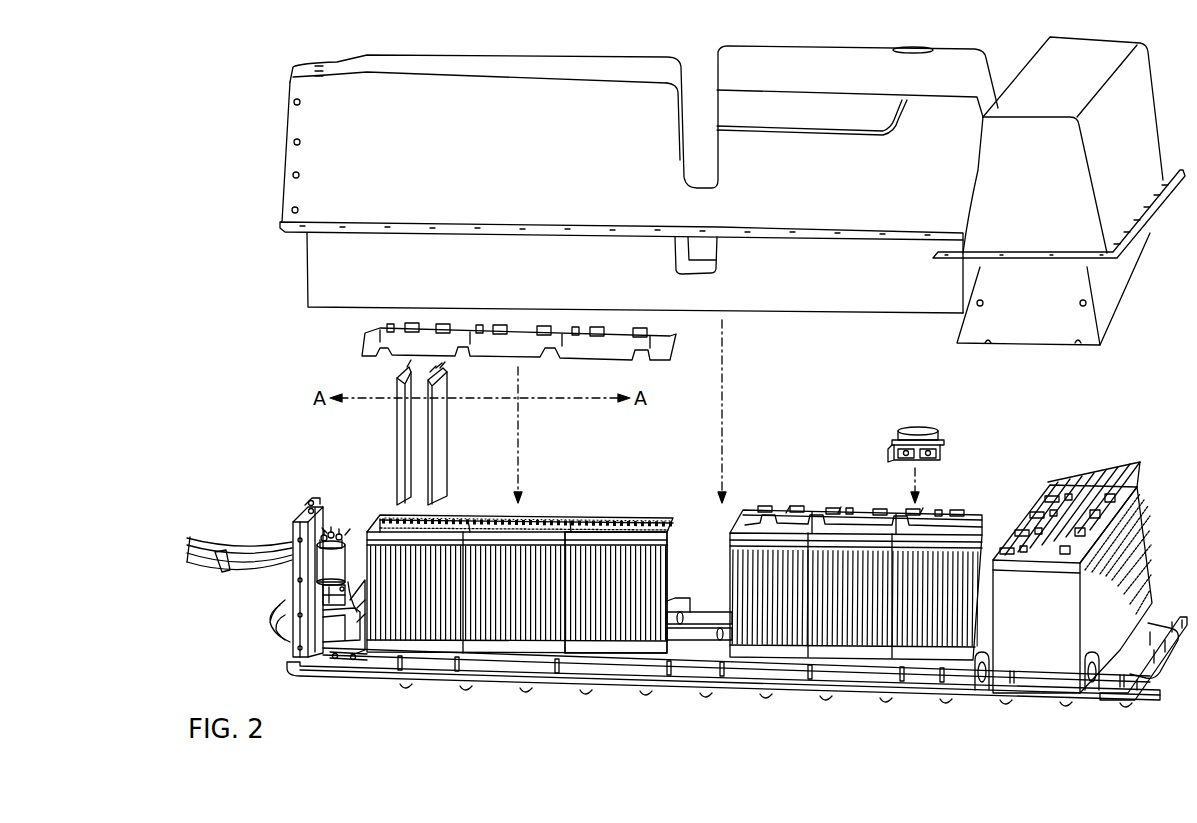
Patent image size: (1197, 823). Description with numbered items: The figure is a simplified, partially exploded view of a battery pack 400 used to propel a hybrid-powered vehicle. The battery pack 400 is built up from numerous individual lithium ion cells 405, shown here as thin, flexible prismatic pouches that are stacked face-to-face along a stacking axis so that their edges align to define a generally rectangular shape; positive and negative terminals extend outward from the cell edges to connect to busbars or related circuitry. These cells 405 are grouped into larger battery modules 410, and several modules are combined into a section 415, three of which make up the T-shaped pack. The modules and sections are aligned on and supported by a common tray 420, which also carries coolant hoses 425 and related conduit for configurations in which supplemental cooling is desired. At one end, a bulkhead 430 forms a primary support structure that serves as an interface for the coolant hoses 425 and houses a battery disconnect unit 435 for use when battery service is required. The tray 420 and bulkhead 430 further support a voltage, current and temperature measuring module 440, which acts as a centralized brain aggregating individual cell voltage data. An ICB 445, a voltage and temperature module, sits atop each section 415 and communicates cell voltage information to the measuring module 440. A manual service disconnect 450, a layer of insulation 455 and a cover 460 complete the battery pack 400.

The battery pack 400 is at (225, 86).
The battery cells 405 is at (396, 442).
The battery modules 410 is at (690, 688).
The battery section 415 is at (690, 724).
The tray 420 is at (910, 682).
The coolant hoses 425 is at (700, 617).
The bulkhead 430 is at (293, 655).
The battery disconnect unit 435 is at (337, 530).
The voltage, current and temperature measuring module 440 is at (360, 600).
The ICB 445 is at (366, 345).
The manual service disconnect 450 is at (920, 428).
The insulation 455 is at (308, 274).
The cover 460 is at (290, 158).